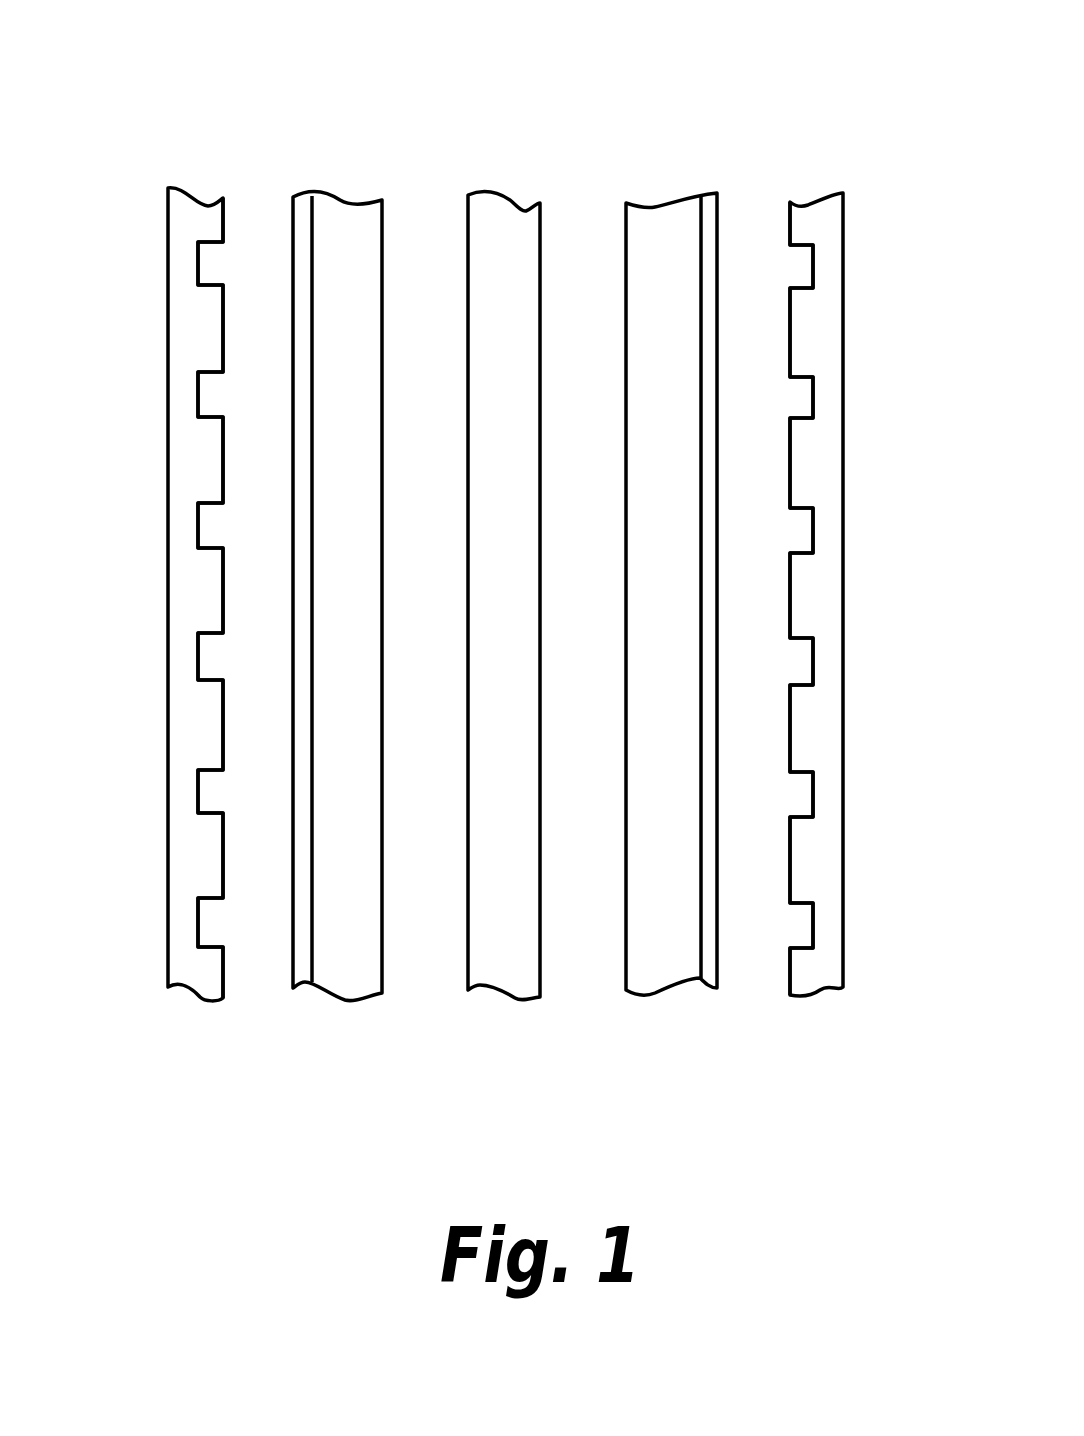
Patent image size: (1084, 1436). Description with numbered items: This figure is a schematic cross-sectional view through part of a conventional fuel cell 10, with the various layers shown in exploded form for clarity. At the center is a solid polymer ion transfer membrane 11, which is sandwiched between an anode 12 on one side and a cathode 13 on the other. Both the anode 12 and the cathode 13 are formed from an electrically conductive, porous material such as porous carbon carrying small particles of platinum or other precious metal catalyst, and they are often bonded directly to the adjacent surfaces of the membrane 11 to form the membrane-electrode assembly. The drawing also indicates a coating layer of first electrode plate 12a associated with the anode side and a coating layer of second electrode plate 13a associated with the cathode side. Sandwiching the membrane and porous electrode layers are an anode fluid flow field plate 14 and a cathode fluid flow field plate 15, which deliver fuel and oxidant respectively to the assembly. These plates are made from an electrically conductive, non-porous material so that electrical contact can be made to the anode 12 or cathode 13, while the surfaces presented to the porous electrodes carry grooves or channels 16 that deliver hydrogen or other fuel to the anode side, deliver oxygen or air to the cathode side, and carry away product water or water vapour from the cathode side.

The fuel cell 10 is at (218, 112).
The solid polymer ion transfer membrane 11 is at (515, 998).
The anode 12 is at (311, 602).
The coating layer of first electrode plate 12a is at (300, 197).
The cathode 13 is at (695, 606).
The coating layer of second electrode plate 13a is at (712, 193).
The anode fluid flow field plate 14 is at (188, 990).
The cathode fluid flow field plate 15 is at (810, 990).
The channels 16 is at (205, 402).